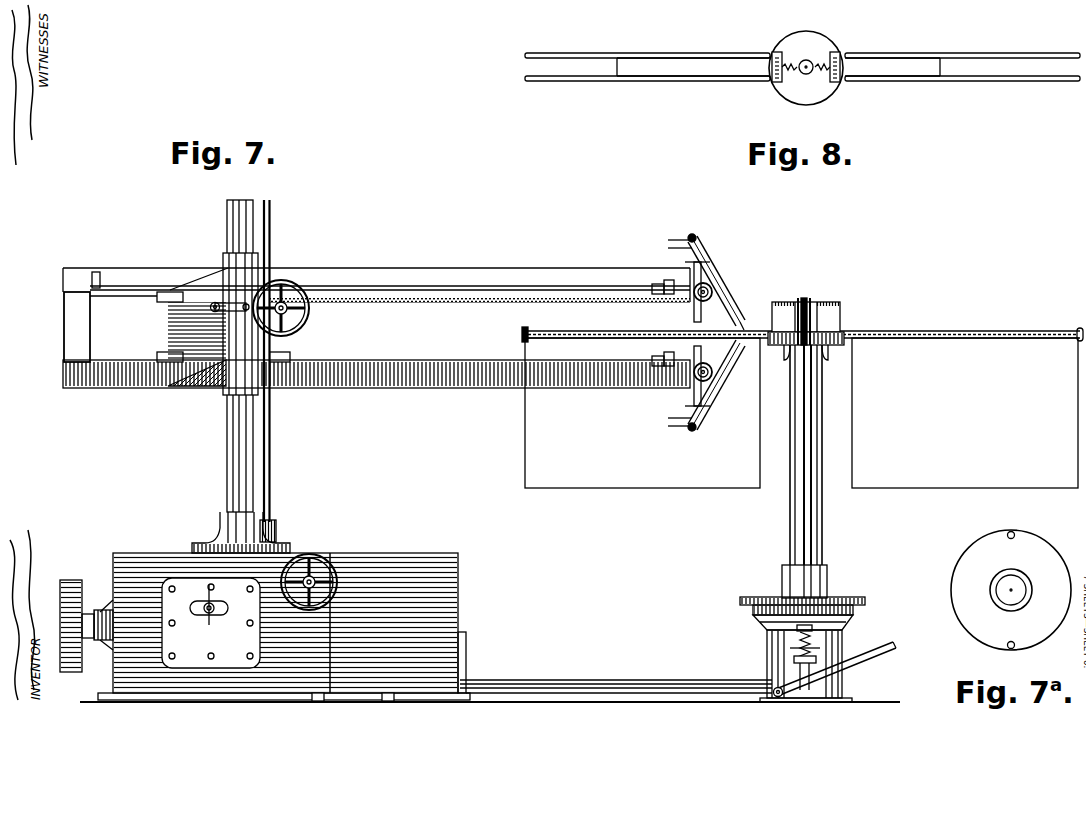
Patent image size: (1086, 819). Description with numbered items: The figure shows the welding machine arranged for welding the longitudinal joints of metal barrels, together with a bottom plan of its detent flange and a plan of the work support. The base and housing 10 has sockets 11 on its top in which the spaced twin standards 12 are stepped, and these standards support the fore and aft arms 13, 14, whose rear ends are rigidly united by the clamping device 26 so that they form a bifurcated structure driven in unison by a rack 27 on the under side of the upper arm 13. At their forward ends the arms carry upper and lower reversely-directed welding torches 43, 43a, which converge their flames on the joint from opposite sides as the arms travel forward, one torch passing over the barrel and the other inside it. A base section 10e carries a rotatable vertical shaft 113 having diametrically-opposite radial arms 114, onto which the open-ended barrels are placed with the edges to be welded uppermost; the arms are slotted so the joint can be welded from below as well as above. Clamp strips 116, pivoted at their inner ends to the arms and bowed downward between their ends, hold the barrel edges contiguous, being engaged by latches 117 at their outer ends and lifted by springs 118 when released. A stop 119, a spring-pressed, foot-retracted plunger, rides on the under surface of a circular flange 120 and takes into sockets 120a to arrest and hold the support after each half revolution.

In FIG. 7, the base and housing 10 is at (150, 554).
In FIG. 7, the base section 10e is at (572, 668).
In FIG. 7, the sockets 11 is at (222, 514).
In FIG. 7, the twin standards 12 is at (227, 426).
In FIG. 7, the upper arm 13 is at (404, 268).
In FIG. 7, the lower arm 14 is at (381, 389).
In FIG. 7, the clamping device 26 is at (64, 327).
In FIG. 7, the rack 27 is at (480, 313).
In FIG. 7, the upper torch 43 is at (724, 284).
In FIG. 7, the lower torch 43a is at (712, 410).
In FIG. 7, the rotatable vertical shaft 113 is at (824, 546).
In FIG. 7, the radial arms 114 is at (571, 339).
In FIG. 7, the clamp strips 116 is at (578, 327).
In FIG. 8, the clamp strips 116 is at (630, 82).
In FIG. 7, the latches 117 is at (522, 330).
In FIG. 7, the springs 118 is at (825, 302).
In FIG. 8, the springs 118 is at (822, 55).
In FIG. 7, the stop 119 is at (792, 620).
In FIG. 7, the circular flange 120 is at (858, 598).
In FIG. 7A, the circular flange 120 is at (960, 604).
In FIG. 7A, the sockets 120a is at (1009, 538).